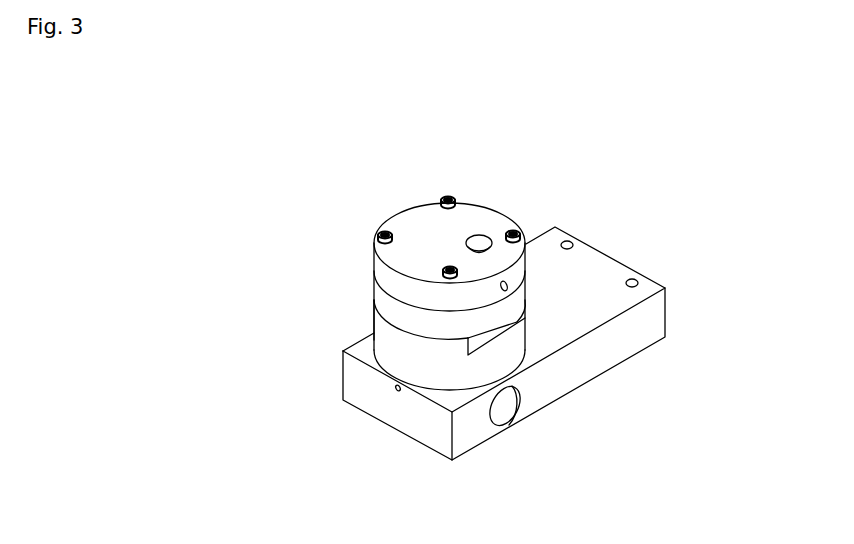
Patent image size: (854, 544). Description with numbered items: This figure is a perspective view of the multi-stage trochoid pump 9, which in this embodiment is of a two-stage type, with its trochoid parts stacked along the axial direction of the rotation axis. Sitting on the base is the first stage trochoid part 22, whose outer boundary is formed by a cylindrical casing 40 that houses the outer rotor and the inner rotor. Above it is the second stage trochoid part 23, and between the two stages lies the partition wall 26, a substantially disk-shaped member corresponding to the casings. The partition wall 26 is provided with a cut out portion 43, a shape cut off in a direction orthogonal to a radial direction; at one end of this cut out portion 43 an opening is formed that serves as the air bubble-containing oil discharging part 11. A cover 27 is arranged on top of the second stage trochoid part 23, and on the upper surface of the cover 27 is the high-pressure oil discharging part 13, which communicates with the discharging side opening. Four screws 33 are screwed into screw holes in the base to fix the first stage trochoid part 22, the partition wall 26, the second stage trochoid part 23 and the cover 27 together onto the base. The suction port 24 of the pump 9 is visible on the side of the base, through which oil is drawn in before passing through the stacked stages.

The multi-stage trochoid pump 9 is at (505, 198).
The air bubble-containing oil discharging part 11 is at (527, 317).
The high-pressure oil discharging part 13 is at (482, 235).
The first stage trochoid part 22 is at (393, 357).
The second stage trochoid part 23 is at (385, 302).
The suction port 24 is at (513, 406).
The partition wall 26 is at (382, 322).
The cover 27 is at (377, 267).
The screws 33 is at (448, 198).
The cylindrical casing 40 is at (420, 370).
The cut out portion 43 is at (482, 343).